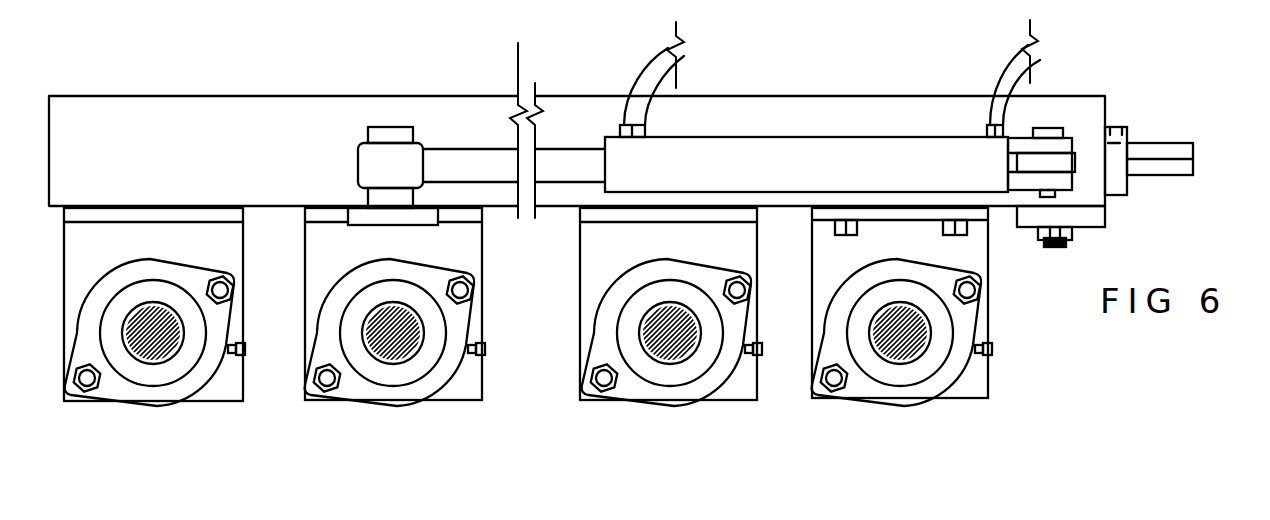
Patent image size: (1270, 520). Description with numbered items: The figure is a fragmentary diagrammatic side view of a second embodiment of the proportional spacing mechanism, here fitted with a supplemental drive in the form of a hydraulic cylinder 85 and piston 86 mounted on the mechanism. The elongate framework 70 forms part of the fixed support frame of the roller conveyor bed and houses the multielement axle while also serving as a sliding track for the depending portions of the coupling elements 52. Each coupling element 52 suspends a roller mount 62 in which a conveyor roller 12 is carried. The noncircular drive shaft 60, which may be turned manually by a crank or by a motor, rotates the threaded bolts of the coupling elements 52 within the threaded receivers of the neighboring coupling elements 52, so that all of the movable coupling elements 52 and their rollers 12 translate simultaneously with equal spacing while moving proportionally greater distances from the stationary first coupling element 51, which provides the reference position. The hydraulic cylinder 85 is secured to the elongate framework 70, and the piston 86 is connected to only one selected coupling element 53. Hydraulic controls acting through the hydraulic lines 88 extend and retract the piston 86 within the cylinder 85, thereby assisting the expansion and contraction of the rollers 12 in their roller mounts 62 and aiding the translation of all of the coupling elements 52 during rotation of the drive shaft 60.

The conveyor roller 12 is at (392, 347).
The first coupling element 51 is at (1009, 368).
The coupling element 52 is at (474, 251).
The selected coupling element 53 is at (500, 312).
The drive shaft 60 is at (1168, 176).
The roller mount 62 is at (445, 387).
The elongate framework 70 is at (233, 94).
The hydraulic cylinder 85 is at (797, 134).
The piston 86 is at (477, 146).
The hydraulic line 88 is at (674, 72).